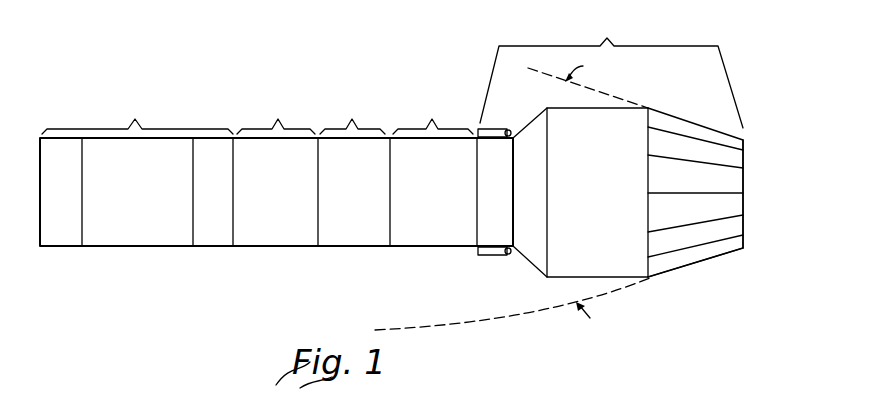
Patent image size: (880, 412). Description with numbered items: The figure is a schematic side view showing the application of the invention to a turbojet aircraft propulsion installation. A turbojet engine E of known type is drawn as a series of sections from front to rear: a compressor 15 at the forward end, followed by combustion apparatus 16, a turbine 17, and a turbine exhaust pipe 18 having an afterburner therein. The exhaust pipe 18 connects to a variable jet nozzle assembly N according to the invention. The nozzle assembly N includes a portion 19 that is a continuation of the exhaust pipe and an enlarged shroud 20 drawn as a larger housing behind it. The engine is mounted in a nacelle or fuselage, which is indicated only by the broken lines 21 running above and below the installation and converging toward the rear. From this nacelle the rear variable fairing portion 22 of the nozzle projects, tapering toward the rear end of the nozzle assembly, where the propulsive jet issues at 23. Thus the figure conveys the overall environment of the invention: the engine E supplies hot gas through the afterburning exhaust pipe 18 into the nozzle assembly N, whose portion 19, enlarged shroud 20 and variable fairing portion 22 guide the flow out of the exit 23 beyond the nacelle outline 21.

The turbojet engine E is at (117, 252).
The compressor 15 is at (170, 233).
The combustion apparatus 16 is at (276, 233).
The turbine 17 is at (350, 233).
The turbine exhaust pipe 18 is at (433, 230).
The portion 19 is at (493, 232).
The enlarged shroud 20 is at (575, 268).
The broken lines 21 is at (548, 75).
The rear variable fairing portion 22 is at (698, 252).
The rear end of the nozzle assembly 23 is at (743, 180).
The variable jet nozzle assembly N is at (668, 280).